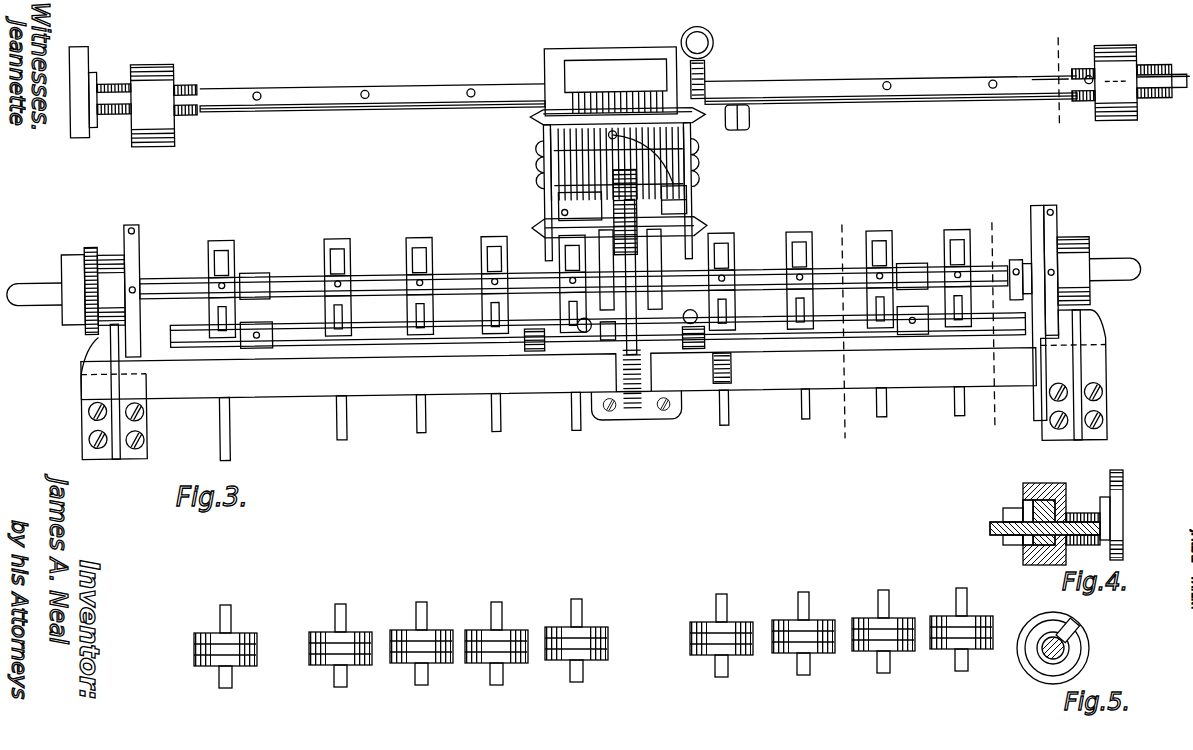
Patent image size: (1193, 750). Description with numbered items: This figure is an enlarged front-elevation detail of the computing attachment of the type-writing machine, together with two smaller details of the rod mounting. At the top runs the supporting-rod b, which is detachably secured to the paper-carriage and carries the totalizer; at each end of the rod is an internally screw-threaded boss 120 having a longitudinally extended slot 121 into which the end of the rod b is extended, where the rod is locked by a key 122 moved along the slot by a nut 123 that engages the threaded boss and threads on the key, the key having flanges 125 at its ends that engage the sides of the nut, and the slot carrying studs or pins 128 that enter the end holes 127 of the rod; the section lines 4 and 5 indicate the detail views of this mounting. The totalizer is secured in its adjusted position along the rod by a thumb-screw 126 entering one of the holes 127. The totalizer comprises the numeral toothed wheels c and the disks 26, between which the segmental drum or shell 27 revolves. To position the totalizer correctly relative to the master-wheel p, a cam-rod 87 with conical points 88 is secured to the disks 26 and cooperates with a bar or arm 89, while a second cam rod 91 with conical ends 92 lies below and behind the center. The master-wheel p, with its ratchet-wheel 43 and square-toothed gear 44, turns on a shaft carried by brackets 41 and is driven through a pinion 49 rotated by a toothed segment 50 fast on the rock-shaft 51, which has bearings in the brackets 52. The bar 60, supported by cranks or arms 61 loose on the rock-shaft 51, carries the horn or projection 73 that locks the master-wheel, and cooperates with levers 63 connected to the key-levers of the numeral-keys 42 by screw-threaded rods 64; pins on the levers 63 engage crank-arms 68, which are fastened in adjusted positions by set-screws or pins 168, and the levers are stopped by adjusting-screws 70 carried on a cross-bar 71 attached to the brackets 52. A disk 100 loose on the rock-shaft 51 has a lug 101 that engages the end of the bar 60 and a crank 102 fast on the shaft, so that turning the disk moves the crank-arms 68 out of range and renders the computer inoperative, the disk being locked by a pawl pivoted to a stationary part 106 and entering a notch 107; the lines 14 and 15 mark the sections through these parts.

In FIG. 3, the section line 4 is at (1102, 70).
In FIG. 3, the section line 5 is at (1058, 82).
In FIG. 3, the section line 14 is at (1012, 321).
In FIG. 3, the section line 15 is at (839, 330).
In FIG. 3, the disks 26 is at (548, 180).
In FIG. 3, the segmental drum or shell 27 is at (628, 52).
In FIG. 3, the brackets 41 is at (663, 258).
In FIG. 3, the numeral-keys 42 is at (816, 622).
In FIG. 3, the ratchet-wheel 43 is at (579, 206).
In FIG. 3, the square-toothed wheel or gear 44 is at (688, 199).
In FIG. 3, the pinion 49 is at (688, 212).
In FIG. 3, the toothed segment 50 is at (662, 330).
In FIG. 3, the rock-shaft 51 is at (450, 272).
In FIG. 3, the brackets 52 is at (80, 378).
In FIG. 3, the bar 60 is at (176, 328).
In FIG. 3, the cranks or arms 61 is at (258, 270).
In FIG. 3, the levers 63 is at (736, 242).
In FIG. 3, the screw-threaded rods 64 is at (346, 426).
In FIG. 3, the crank-arms 68 is at (350, 282).
In FIG. 3, the adjusting-screws 70 is at (346, 350).
In FIG. 3, the cross-bar 71 is at (732, 386).
In FIG. 3, the horn or projection 73 is at (610, 342).
In FIG. 3, the cam-rod 87 is at (563, 117).
In FIG. 3, the conical points 88 is at (547, 118).
In FIG. 3, the bar or arm 89 is at (665, 165).
In FIG. 3, the second cam rod or bar 91 is at (598, 248).
In FIG. 3, the conical ends 92 is at (545, 232).
In FIG. 3, the disk 100 is at (1032, 232).
In FIG. 3, the lug 101 is at (1026, 341).
In FIG. 3, the crank or arm 102 is at (1015, 266).
In FIG. 3, the stationary part 106 is at (1058, 228).
In FIG. 3, the notch 107 is at (1048, 214).
In FIG. 3, the screw-threaded bosses 120 is at (112, 108).
In FIG. 4, the screw-threaded bosses 120 is at (1008, 544).
In FIG. 5, the screw-threaded bosses 120 is at (1048, 662).
In FIG. 3, the slot 121 is at (113, 78).
In FIG. 4, the slot 121 is at (1008, 512).
In FIG. 4, the key 122 is at (1064, 543).
In FIG. 3, the nut 123 is at (165, 140).
In FIG. 4, the nut 123 is at (1035, 565).
In FIG. 5, the nut 123 is at (1090, 647).
In FIG. 4, the flanges 125 is at (1068, 500).
In FIG. 5, the flanges 125 is at (1068, 628).
In FIG. 3, the thumb-screw 126 is at (717, 44).
In FIG. 3, the holes 127 is at (890, 95).
In FIG. 3, the studs or pins 128 is at (184, 80).
In FIG. 4, the studs or pins 128 is at (1028, 500).
In FIG. 3, the set-screws or pins 168 is at (333, 268).
In FIG. 3, the supporting-rod b is at (942, 83).
In FIG. 5, the supporting-rod b is at (1040, 653).
In FIG. 3, the numeral toothed wheels c is at (565, 143).
In FIG. 3, the master-wheel p is at (612, 240).